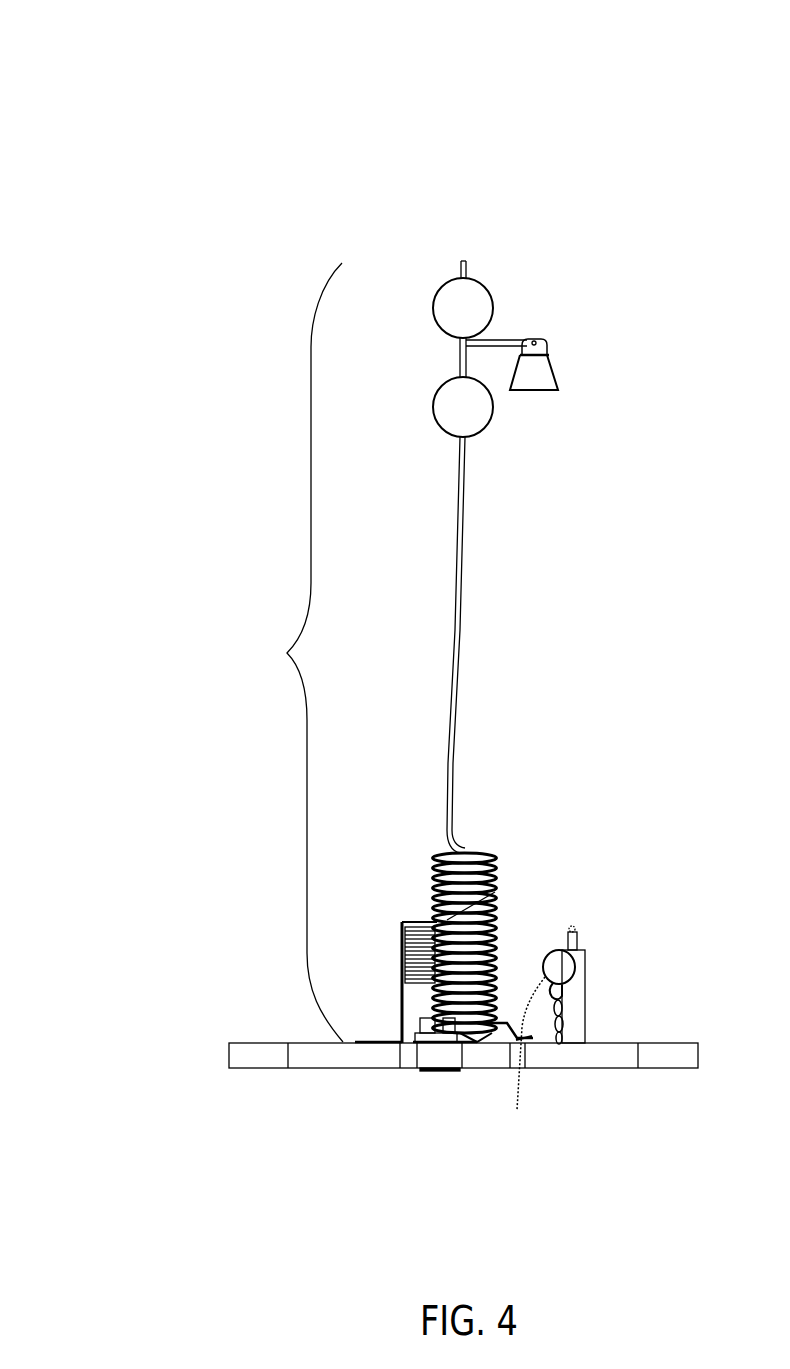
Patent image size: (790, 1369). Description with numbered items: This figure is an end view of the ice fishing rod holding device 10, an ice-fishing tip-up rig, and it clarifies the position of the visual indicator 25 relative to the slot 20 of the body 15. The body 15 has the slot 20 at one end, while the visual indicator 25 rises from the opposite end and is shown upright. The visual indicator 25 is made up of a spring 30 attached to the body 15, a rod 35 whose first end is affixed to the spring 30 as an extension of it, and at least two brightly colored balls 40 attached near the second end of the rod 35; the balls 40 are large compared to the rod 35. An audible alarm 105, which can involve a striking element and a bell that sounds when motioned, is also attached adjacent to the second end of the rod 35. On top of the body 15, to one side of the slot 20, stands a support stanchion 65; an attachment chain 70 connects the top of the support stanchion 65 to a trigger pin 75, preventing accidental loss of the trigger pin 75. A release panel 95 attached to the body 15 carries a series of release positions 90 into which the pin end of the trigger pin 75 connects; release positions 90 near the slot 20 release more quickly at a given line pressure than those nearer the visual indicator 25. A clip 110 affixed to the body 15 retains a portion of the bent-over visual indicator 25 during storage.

The ice fishing rod holding device 10 is at (130, 172).
The body 15 is at (615, 1060).
The slot 20 is at (446, 1060).
The visual indicator 25 is at (280, 653).
The spring 30 is at (498, 857).
The rod 35 is at (457, 632).
The balls 40 is at (478, 300).
The support stanchion 65 is at (575, 1015).
The attachment chain 70 is at (577, 933).
The trigger pin 75 is at (565, 990).
The release positions 90 is at (495, 892).
The release panel 95 is at (428, 922).
The audible alarm 105 is at (538, 367).
The clip 110 is at (420, 1043).